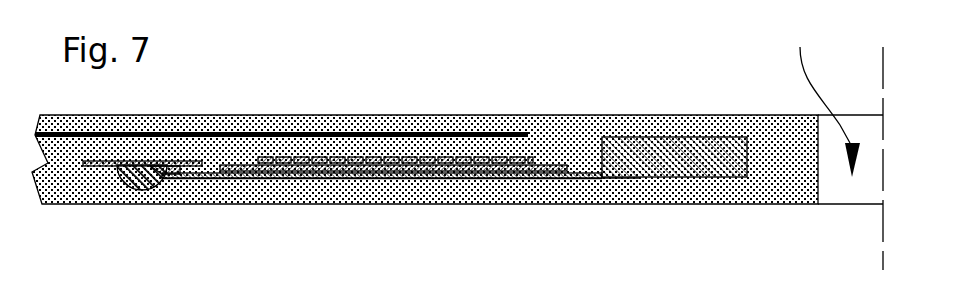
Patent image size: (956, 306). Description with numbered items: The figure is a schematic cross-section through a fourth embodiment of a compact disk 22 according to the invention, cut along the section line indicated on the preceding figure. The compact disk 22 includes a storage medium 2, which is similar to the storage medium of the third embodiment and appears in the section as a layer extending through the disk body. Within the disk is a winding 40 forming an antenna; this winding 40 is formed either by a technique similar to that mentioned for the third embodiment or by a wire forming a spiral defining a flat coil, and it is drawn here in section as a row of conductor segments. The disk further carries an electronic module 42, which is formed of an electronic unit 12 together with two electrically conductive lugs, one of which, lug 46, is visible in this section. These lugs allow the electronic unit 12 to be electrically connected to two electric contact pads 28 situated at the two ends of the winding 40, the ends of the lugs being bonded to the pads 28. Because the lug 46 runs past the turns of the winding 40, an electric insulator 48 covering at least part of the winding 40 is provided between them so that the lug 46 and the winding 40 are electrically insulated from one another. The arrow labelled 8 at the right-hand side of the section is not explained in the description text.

The storage medium 2 is at (290, 133).
The direction of insertion 8 is at (826, 96).
The electronic unit 12 is at (663, 160).
The compact disk 22 is at (782, 161).
The electric contact pads 28 is at (160, 162).
The winding 40 is at (413, 137).
The electronic module 42 is at (612, 190).
The electrically conductive lug 46 is at (380, 179).
The electric insulator 48 is at (321, 179).